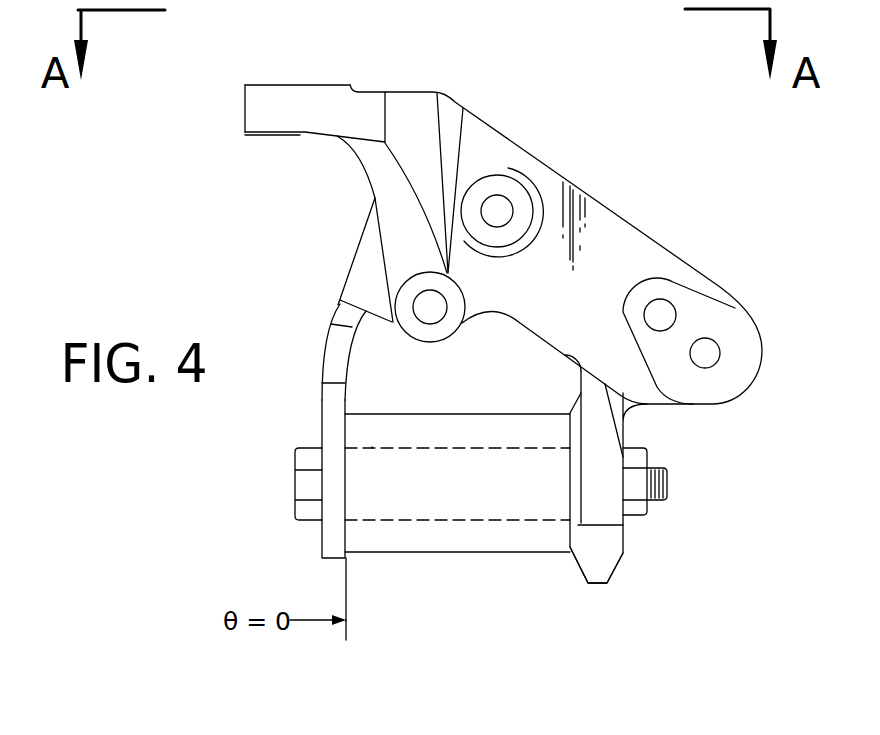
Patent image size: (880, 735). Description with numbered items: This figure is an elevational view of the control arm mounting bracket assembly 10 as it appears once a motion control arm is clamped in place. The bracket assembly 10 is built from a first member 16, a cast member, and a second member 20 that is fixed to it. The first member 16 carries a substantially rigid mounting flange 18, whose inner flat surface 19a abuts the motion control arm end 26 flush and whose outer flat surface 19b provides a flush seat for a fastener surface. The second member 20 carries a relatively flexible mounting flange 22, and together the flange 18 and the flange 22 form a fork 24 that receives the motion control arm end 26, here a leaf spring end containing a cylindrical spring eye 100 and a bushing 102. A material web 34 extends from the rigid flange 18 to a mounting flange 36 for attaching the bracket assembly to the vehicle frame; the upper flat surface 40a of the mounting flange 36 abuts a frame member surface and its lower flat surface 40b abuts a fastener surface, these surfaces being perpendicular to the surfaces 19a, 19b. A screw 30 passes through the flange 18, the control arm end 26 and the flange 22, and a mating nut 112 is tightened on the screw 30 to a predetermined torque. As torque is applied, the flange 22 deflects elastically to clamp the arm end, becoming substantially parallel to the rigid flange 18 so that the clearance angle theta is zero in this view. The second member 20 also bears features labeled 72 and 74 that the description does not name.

The bracket assembly 10 is at (573, 128).
The first member 16 is at (642, 253).
The mounting flange 18 is at (605, 558).
The inner flat surface 19a is at (573, 527).
The outer flat surface 19b is at (628, 535).
The second member 20 is at (370, 242).
The mounting flange 22 is at (327, 423).
The fork 24 is at (449, 566).
The motion control arm end 26 is at (363, 540).
The screw 30 is at (668, 485).
The material web 34 is at (595, 190).
The mounting flange 36 is at (343, 112).
The upper flat surface 40a is at (263, 83).
The lower flat surface 40b is at (262, 137).
The inclined plate portion 72 is at (347, 282).
The bend portion 74 is at (335, 348).
The spring eye 100 is at (458, 423).
The bushing 102 is at (372, 447).
The mating nut 112 is at (638, 460).